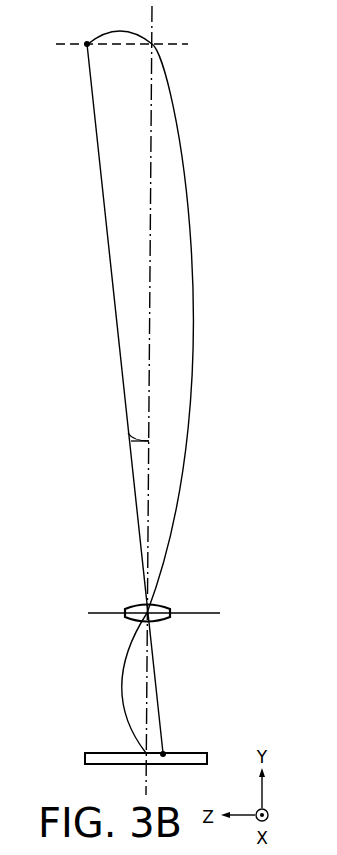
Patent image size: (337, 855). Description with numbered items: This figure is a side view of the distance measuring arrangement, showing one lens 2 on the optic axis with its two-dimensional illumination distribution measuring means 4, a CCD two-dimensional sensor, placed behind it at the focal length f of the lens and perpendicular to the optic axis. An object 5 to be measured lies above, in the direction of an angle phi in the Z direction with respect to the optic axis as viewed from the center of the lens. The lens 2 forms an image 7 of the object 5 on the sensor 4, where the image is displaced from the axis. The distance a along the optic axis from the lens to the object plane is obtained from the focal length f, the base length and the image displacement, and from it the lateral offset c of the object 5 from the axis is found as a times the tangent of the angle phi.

The lens 2 is at (130, 607).
The two-dimensional illumination distribution measuring means 4 is at (119, 763).
The object 5 is at (87, 44).
The image 7 is at (165, 752).
The distance a is at (175, 328).
The distance c is at (120, 32).
The focal length f is at (130, 683).
The angle phi is at (128, 433).